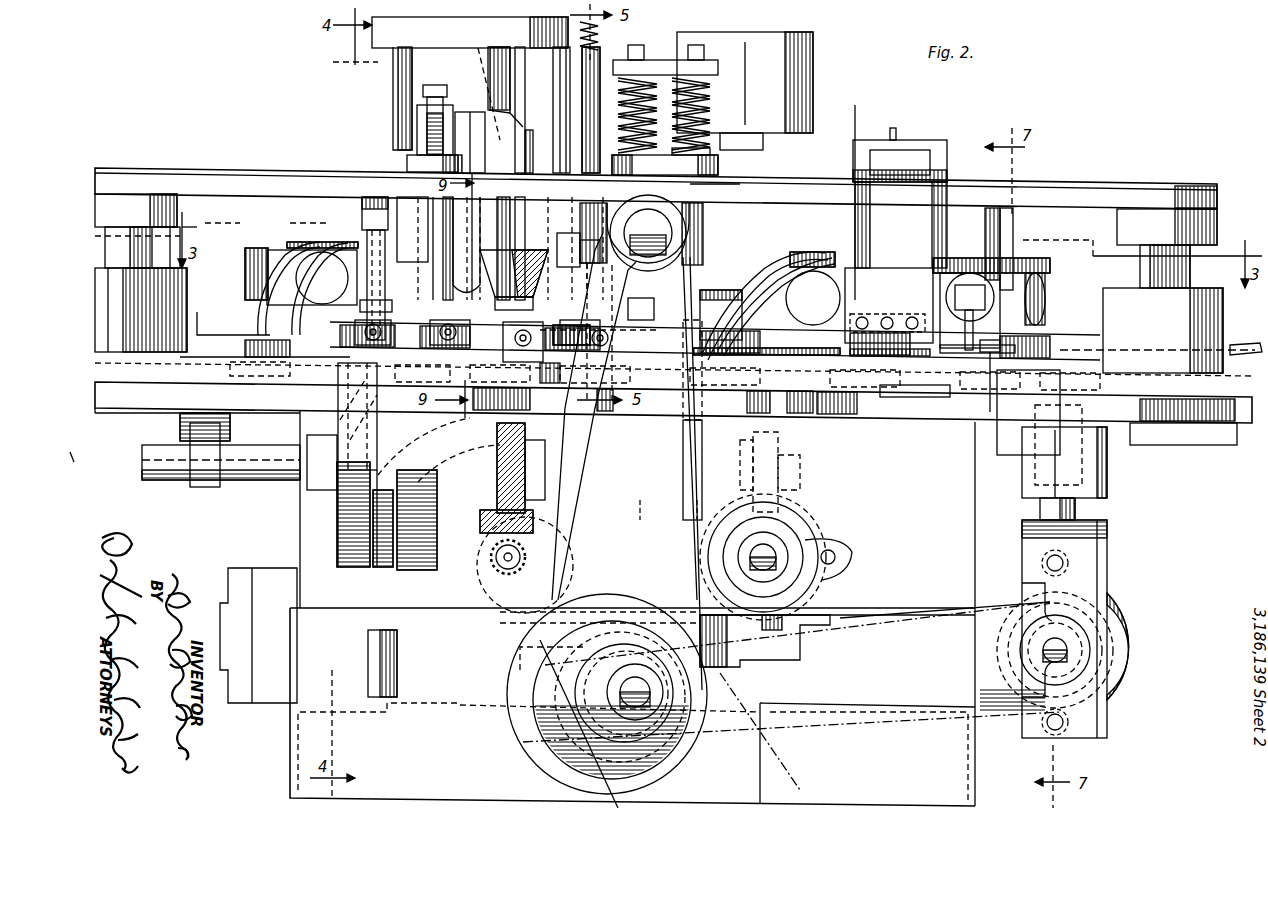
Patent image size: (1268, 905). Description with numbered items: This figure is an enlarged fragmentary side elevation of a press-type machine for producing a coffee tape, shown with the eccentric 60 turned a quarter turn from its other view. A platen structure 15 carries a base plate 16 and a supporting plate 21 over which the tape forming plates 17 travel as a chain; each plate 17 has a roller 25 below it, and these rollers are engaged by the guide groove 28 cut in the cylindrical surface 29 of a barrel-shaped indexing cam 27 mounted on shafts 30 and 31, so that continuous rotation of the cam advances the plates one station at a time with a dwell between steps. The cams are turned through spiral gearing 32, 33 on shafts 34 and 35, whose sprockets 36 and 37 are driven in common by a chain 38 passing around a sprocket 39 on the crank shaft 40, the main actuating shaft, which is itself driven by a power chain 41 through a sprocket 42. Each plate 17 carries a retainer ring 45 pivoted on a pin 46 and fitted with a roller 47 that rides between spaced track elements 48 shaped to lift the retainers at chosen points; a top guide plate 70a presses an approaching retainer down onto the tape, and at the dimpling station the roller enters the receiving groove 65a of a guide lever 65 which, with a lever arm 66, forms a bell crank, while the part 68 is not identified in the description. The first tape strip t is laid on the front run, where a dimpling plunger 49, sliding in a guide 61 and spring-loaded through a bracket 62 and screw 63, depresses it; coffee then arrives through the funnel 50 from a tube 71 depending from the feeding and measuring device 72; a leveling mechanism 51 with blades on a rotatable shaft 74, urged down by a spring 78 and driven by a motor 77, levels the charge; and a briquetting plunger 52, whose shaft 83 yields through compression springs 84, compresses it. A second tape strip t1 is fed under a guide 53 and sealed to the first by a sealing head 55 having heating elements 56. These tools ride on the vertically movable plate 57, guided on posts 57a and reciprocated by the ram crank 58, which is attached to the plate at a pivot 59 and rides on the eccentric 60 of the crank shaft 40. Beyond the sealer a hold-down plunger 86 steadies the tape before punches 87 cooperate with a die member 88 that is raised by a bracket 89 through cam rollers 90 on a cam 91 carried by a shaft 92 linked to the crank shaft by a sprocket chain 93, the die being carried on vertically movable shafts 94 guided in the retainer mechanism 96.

The platen structure 15 is at (977, 473).
The base plate 16 is at (936, 414).
The tape forming plate 17 is at (810, 413).
The supporting plate 21 is at (900, 390).
The roller 25 is at (300, 371).
The indexing cam 27 is at (337, 537).
The guide groove 28 is at (378, 570).
The cylindrical surface 29 is at (347, 571).
The shaft 30 is at (254, 478).
The shaft 31 is at (802, 482).
The spiral gear 32 is at (497, 429).
The spiral gear 33 is at (805, 525).
The shaft 34 is at (527, 557).
The shaft 35 is at (780, 555).
The sprocket 36 is at (560, 545).
The sprocket 37 is at (702, 512).
The chain 38 is at (645, 503).
The sprocket 39 is at (502, 690).
The crank shaft 40 is at (642, 704).
The power chain 41 is at (795, 775).
The sprocket 42 is at (740, 672).
The retainer ring 45 is at (246, 264).
The pin 46 is at (710, 292).
The roller 47 is at (325, 245).
The track elements 48 is at (306, 246).
The dimpling plunger 49 is at (386, 296).
The funnel 50 is at (512, 279).
The leveling mechanism 51 is at (565, 256).
The briquetting plunger 52 is at (651, 317).
The guide 53 is at (850, 351).
The sealing head 55 is at (840, 302).
The heating elements 56 is at (858, 323).
The vertically movable plate structure 57 is at (1058, 184).
The guide posts 57a is at (118, 242).
The ram crank 58 is at (683, 450).
The pivot 59 is at (662, 232).
The eccentric 60 is at (545, 718).
The guide 61 is at (407, 207).
The bracket 62 is at (418, 118).
The screw 63 is at (428, 134).
The guide lever 65 is at (452, 326).
The receiving groove 65a is at (457, 322).
The lever arm 66 is at (383, 400).
The post 68 is at (385, 273).
The top guide plate 70a is at (523, 343).
The tube 71 is at (527, 150).
The coffee feeding and measuring device 72 is at (476, 36).
The rotatable shaft 74 is at (622, 97).
The motor 77 is at (812, 65).
The spring 78 is at (600, 36).
The briquetting plunger shaft 83 is at (690, 191).
The compression springs 84 is at (712, 148).
The hold-down plunger 86 is at (972, 354).
The punches 87 is at (1012, 328).
The die member 88 is at (1010, 353).
The bracket 89 is at (1090, 528).
The cam rollers 90 is at (1068, 563).
The cam 91 is at (1120, 668).
The shaft 92 is at (1066, 648).
The sprocket chain 93 is at (930, 612).
The vertically movable shafts 94 is at (1043, 505).
The retainer mechanism 96 is at (1107, 472).
The tape strip t is at (263, 266).
The second tape strip t1 is at (856, 110).